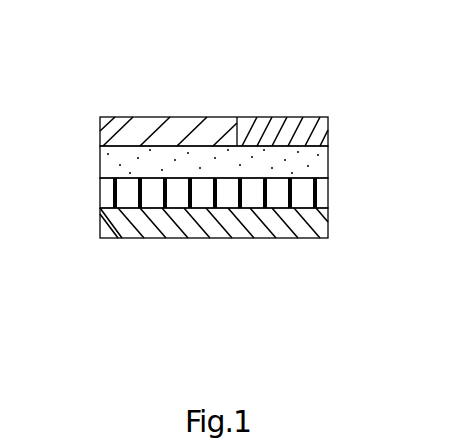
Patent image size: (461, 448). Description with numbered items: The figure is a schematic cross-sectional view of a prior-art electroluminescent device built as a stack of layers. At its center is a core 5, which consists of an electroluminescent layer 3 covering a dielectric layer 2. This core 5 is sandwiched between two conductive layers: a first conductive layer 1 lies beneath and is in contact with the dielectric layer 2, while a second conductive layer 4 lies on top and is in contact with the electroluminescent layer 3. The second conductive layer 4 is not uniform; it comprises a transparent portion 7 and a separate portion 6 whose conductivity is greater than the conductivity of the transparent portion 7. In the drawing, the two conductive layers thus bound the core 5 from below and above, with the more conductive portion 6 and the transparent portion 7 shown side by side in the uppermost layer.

The first conductive layer 1 is at (332, 224).
The dielectric layer 2 is at (330, 195).
The electroluminescent layer 3 is at (330, 152).
The second conductive layer 4 is at (330, 128).
The core 5 is at (92, 138).
The portion of greater conductivity 6 is at (280, 118).
The transparent portion 7 is at (150, 118).